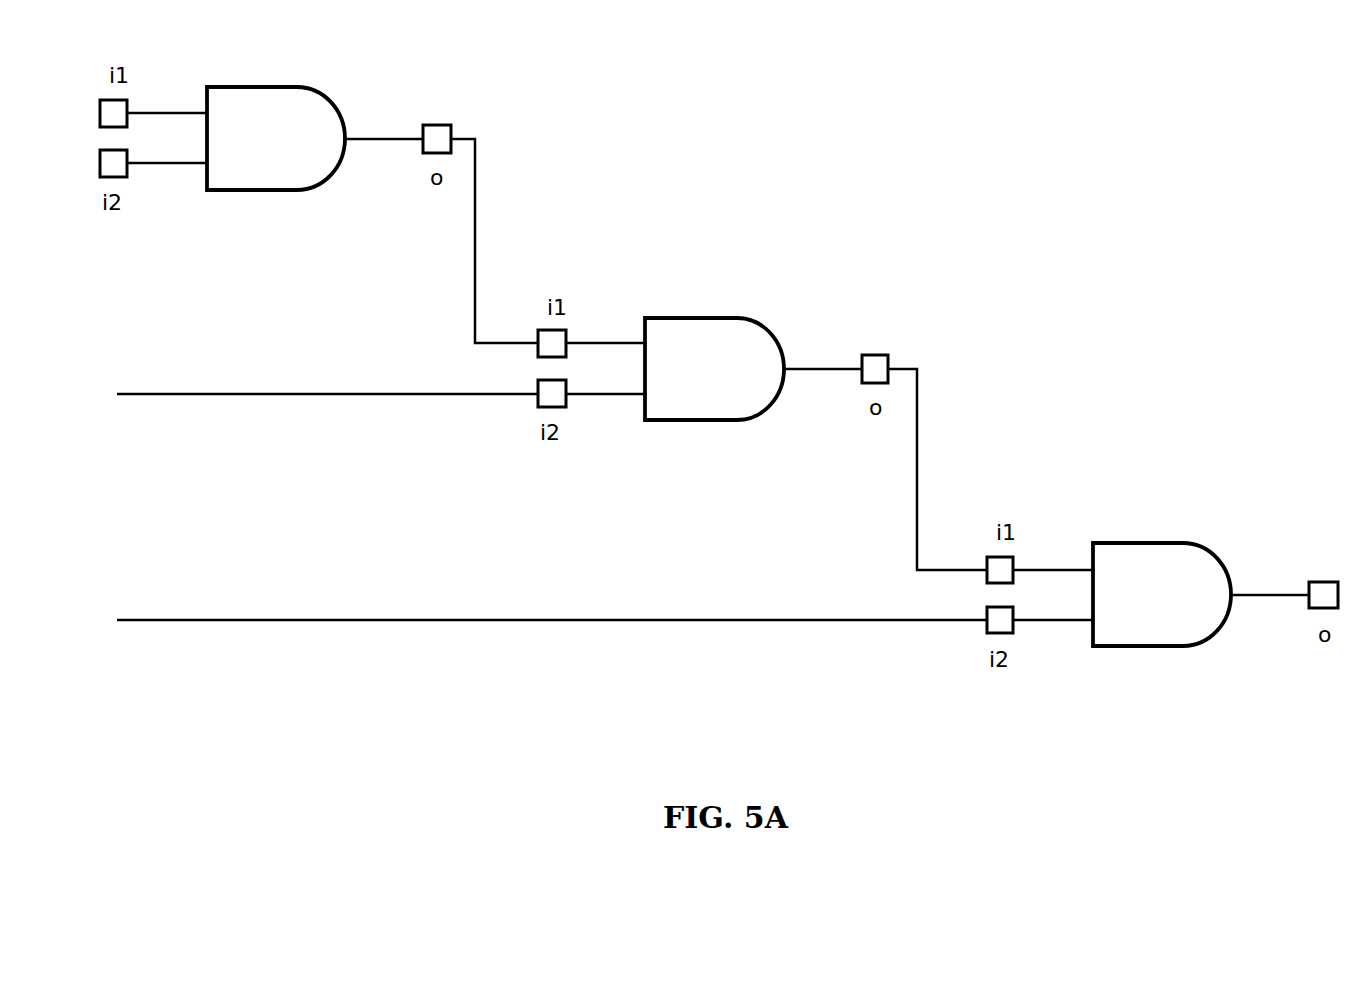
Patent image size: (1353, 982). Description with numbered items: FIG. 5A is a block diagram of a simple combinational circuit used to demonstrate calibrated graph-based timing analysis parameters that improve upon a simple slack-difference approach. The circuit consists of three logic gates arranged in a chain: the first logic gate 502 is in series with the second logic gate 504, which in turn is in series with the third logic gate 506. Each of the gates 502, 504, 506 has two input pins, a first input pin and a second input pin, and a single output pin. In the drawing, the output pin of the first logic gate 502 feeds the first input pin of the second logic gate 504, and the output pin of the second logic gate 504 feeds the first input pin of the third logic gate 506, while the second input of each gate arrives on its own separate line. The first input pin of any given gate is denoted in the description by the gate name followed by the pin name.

The logic gate U1 502 is at (290, 87).
The logic gate U2 504 is at (728, 318).
The logic gate U3 506 is at (1178, 543).